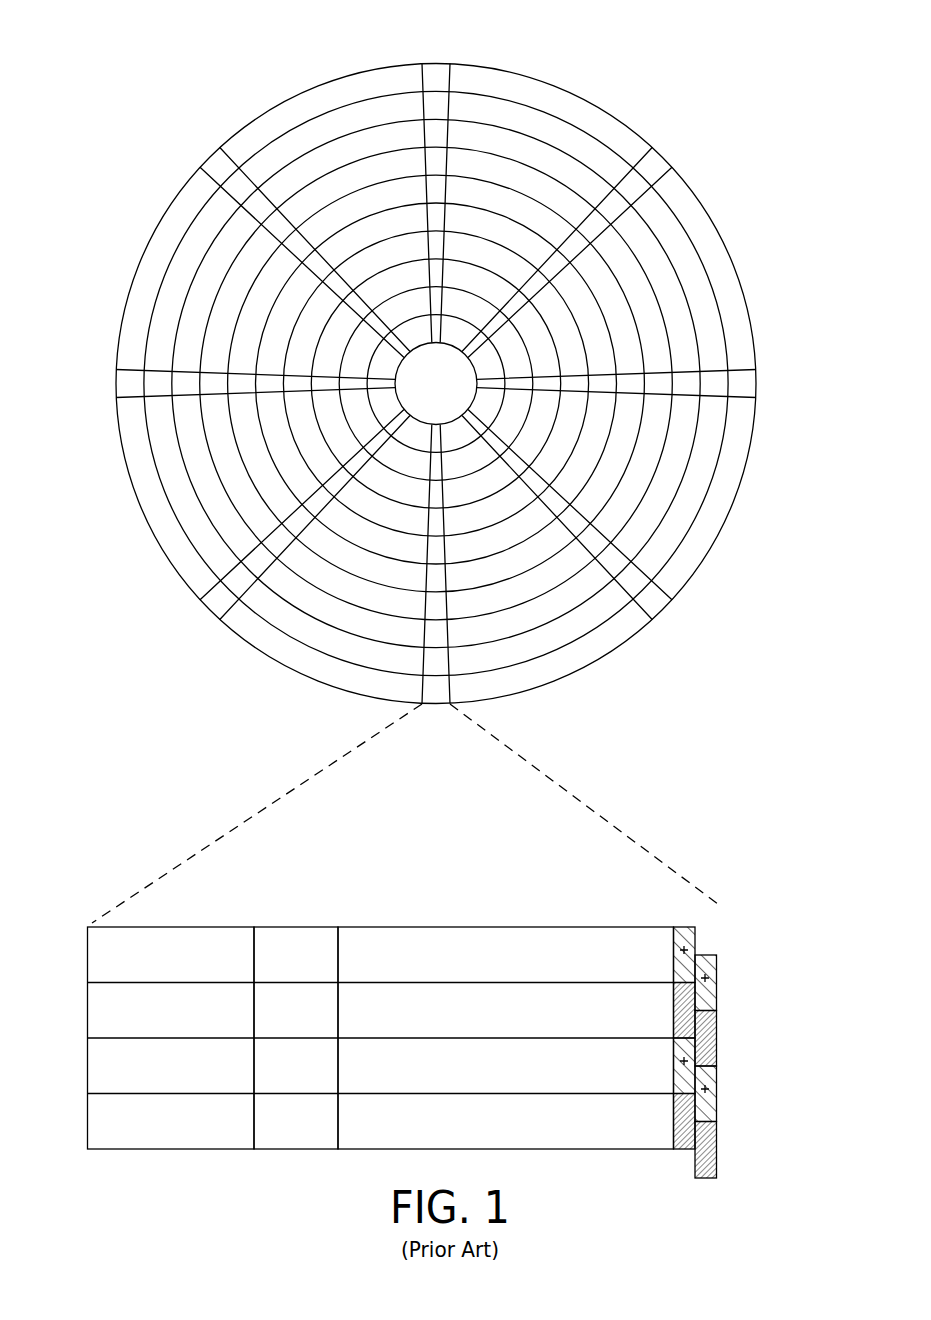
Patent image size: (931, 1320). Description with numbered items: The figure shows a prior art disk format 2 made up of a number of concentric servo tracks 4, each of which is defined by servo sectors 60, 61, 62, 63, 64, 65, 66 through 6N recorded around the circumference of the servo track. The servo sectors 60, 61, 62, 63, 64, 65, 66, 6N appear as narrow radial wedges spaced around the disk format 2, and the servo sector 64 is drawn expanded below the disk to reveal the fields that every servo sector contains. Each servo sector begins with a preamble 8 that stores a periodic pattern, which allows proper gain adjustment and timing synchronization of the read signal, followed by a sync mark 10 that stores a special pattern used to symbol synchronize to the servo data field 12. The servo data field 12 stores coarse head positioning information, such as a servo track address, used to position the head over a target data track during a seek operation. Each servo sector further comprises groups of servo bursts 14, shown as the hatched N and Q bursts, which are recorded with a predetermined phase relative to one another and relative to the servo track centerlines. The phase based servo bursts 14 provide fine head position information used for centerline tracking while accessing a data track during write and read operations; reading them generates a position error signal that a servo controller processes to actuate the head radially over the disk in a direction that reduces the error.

The disk format 2 is at (196, 64).
The servo tracks 4 is at (568, 110).
The servo sector 60 is at (440, 68).
The servo sector 61 is at (655, 165).
The servo sector 62 is at (750, 383).
The servo sector 63 is at (655, 610).
The servo sector 64 is at (292, 776).
The servo sector 65 is at (215, 612).
The servo sector 66 is at (118, 384).
The servo sector 6N is at (215, 163).
The preamble 8 is at (178, 926).
The sync mark 10 is at (300, 926).
The servo data field 12 is at (491, 926).
The servo bursts 14 is at (714, 922).